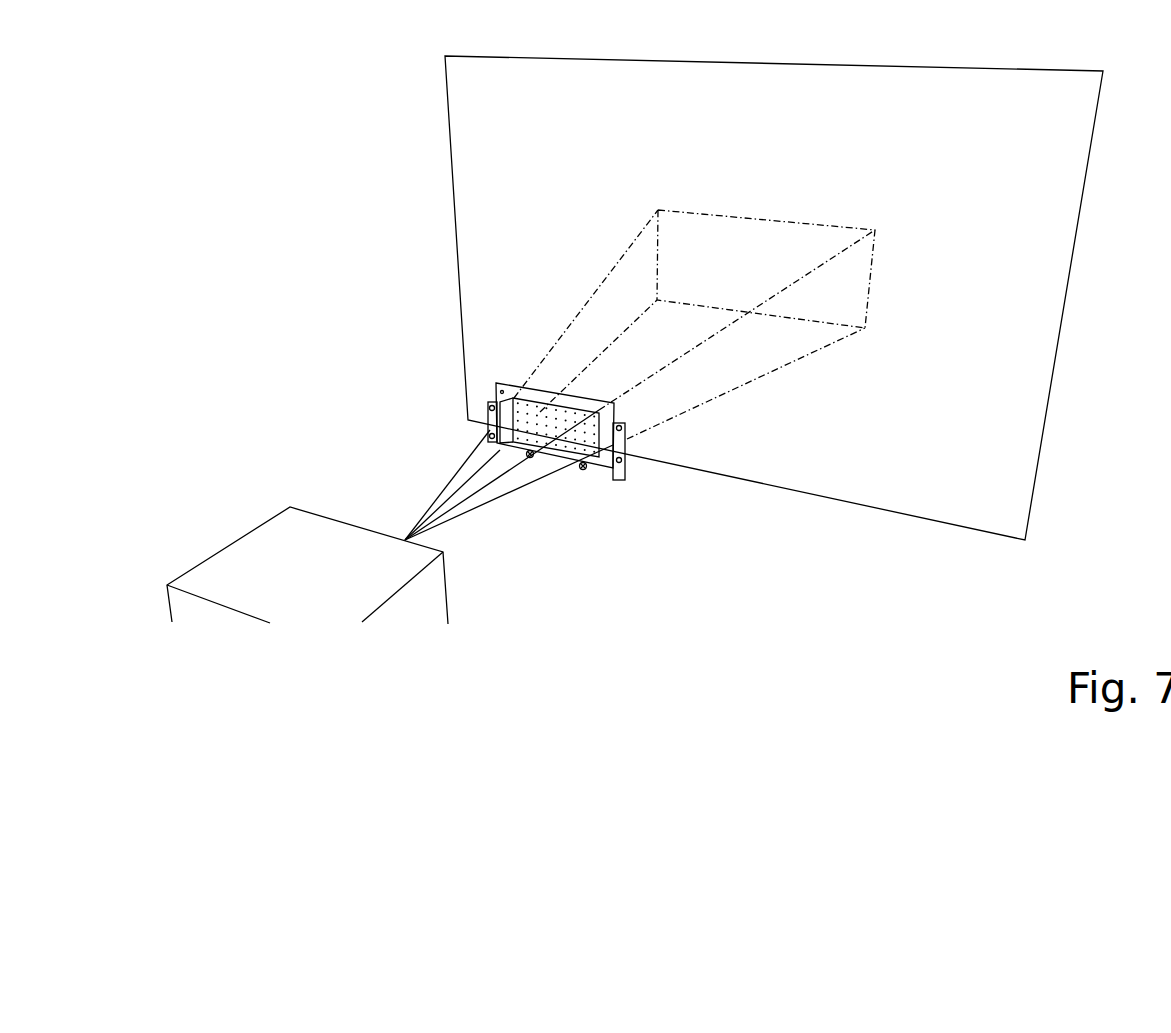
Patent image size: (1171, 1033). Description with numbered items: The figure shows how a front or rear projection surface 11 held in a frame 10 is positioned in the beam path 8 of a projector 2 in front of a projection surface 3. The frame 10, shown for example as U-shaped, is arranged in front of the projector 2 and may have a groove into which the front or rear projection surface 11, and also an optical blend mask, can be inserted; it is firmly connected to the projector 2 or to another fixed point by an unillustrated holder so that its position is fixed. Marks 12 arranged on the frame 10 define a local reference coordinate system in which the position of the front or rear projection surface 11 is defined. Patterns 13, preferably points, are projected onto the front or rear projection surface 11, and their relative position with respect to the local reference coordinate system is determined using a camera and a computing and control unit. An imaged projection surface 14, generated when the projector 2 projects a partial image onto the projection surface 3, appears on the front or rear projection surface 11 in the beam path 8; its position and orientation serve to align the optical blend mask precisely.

The projector 2 is at (275, 595).
The projection surface 3 is at (1063, 173).
The beam path 8 is at (472, 508).
The frame 10 is at (495, 448).
The front or rear projection surface 11 is at (502, 391).
The marks 12 is at (583, 466).
The patterns 13 is at (527, 422).
The imaged projection surface 14 is at (553, 408).